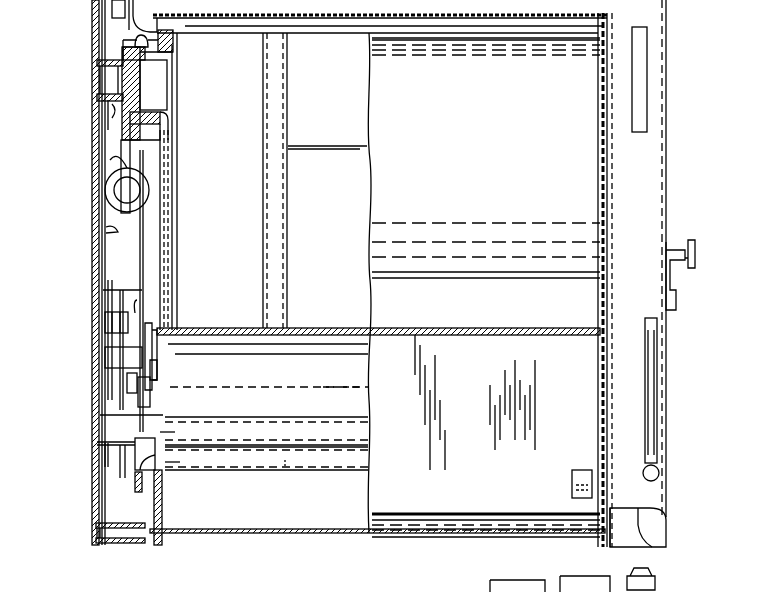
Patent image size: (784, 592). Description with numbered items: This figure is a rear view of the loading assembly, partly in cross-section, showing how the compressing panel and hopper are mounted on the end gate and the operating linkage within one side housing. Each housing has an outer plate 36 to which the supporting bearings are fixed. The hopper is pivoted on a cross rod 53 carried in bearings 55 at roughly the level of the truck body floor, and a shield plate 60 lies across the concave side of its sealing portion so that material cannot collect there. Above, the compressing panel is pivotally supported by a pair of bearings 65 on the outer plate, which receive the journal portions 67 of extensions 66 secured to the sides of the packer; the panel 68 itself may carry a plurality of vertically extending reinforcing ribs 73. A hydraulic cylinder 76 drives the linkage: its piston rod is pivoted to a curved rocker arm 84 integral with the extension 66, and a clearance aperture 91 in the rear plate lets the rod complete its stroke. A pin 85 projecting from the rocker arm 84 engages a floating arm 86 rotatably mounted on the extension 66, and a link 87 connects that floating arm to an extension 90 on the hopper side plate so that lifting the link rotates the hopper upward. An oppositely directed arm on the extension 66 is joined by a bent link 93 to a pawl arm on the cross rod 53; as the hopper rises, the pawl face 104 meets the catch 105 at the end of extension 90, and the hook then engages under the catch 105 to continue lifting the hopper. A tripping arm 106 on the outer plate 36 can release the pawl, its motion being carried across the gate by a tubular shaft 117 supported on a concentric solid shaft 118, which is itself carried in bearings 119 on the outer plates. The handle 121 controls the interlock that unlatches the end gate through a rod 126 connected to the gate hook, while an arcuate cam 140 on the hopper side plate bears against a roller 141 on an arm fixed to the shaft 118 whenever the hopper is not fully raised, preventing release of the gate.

The outer plate 36 is at (90, 438).
The cross rod 53 is at (243, 425).
The bearings 55 is at (110, 422).
The shield plate 60 is at (545, 339).
The bearings 65 is at (107, 115).
The extensions 66 is at (138, 92).
The journal portions 67 is at (97, 78).
The panel 68 is at (572, 482).
The reinforcing ribs 73 is at (277, 237).
The hydraulic cylinder 76 is at (110, 162).
The rocker arm 84 is at (113, 188).
The pin 85 is at (157, 128).
The floating arm 86 is at (150, 46).
The link 87 is at (152, 232).
The extension 90 is at (238, 371).
The clearance aperture 91 is at (648, 61).
The link 93 is at (110, 230).
The pawl face 104 is at (150, 398).
The catch 105 is at (128, 380).
The arm 106 is at (675, 278).
The tubular shaft 117 is at (185, 472).
The solid shaft 118 is at (280, 470).
The bearings 119 is at (112, 470).
The handle 121 is at (650, 433).
The rod 126 is at (244, 591).
The arcuate cam 140 is at (167, 440).
The roller 141 is at (135, 487).